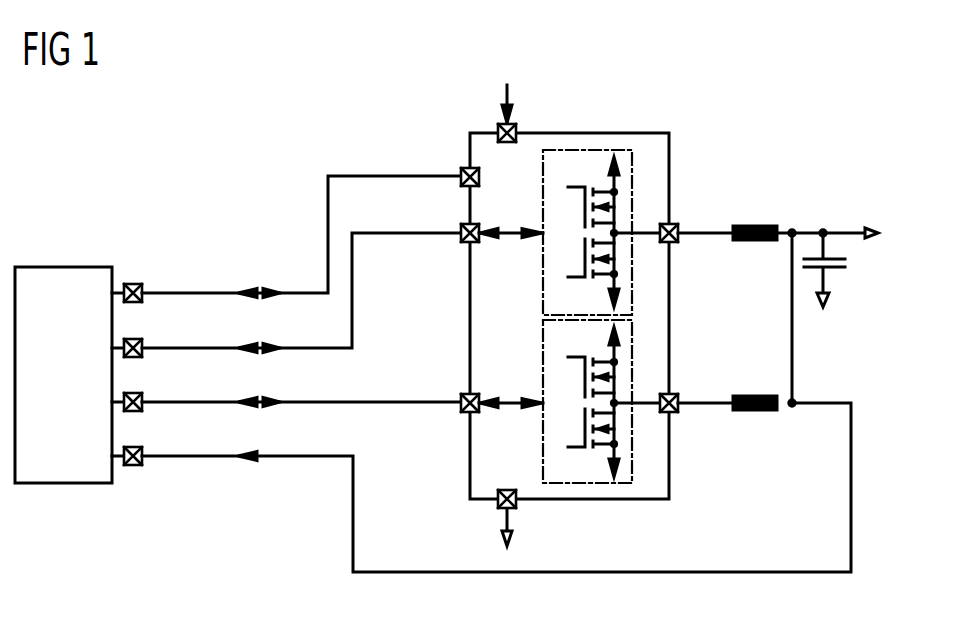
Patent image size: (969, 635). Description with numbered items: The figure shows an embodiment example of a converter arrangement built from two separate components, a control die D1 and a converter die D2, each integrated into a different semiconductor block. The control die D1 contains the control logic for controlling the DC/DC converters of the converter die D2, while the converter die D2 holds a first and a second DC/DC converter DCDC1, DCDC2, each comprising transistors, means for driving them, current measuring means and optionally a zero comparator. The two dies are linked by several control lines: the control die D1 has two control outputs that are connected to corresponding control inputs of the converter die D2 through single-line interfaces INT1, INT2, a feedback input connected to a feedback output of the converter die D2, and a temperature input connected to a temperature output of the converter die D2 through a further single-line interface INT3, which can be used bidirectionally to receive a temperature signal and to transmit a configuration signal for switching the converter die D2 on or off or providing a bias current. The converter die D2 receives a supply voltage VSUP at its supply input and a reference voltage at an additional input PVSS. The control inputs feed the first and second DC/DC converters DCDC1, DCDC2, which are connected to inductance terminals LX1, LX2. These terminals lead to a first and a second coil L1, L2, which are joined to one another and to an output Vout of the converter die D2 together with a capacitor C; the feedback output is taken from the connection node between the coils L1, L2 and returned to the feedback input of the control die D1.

The control die D1 is at (64, 267).
The converter die D2 is at (671, 318).
The first DC/DC converter DCDC1 is at (600, 150).
The second DC/DC converter DCDC2 is at (590, 485).
The single-line interface INT1 is at (392, 400).
The single-line interface INT2 is at (353, 310).
The single-line interface INT3 is at (390, 175).
The first coil L1 is at (752, 223).
The second coil L2 is at (752, 393).
The capacitor C is at (843, 272).
The inductance terminal LX1 is at (696, 221).
The inductance terminal LX2 is at (696, 391).
The supply voltage VSUP is at (535, 113).
The additional input PVSS is at (535, 518).
The output Vout is at (829, 297).